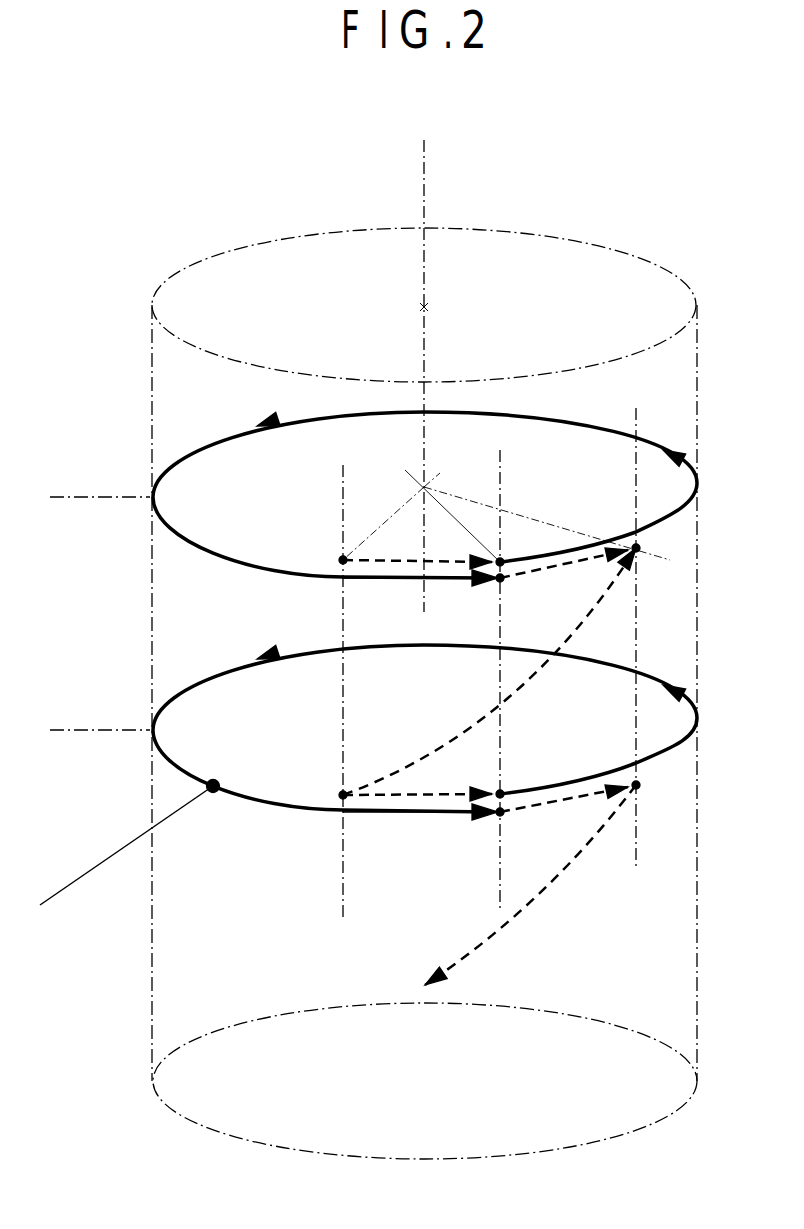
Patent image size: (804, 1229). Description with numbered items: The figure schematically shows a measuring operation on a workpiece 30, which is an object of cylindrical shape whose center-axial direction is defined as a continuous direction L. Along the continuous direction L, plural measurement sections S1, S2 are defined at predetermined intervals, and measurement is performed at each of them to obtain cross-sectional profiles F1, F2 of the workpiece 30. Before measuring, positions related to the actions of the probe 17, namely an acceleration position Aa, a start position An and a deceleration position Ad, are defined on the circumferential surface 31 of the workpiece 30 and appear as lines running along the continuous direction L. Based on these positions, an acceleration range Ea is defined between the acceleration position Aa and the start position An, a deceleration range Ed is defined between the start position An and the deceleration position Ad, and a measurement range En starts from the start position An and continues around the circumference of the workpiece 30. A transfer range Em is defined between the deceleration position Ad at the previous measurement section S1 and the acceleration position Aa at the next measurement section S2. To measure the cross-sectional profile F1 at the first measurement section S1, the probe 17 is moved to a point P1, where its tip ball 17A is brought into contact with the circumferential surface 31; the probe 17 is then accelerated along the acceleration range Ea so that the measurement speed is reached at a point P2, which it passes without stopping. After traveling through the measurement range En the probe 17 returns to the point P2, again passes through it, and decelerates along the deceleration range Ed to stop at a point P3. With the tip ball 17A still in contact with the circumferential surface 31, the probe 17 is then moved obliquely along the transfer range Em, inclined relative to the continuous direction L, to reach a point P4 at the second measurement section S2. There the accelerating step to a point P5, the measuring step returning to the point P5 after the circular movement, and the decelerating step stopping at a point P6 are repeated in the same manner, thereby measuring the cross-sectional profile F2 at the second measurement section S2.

The workpiece 30 is at (620, 251).
The circumferential surface 31 is at (680, 352).
The continuous direction L is at (428, 158).
The probe 17 is at (88, 870).
The tip ball 17A is at (221, 798).
The cross-sectional profile F1 is at (200, 468).
The cross-sectional profile F2 is at (200, 701).
The first measurement section S1 is at (86, 498).
The second measurement section S2 is at (86, 731).
The acceleration position Aa is at (343, 465).
The start position An is at (500, 450).
The deceleration position Ad is at (636, 408).
The measurement range En is at (668, 513).
The acceleration range Ea is at (390, 566).
The deceleration range Ed is at (586, 566).
The transfer range Em is at (583, 620).
The point P1 is at (343, 560).
The point P2 is at (500, 562).
The point P3 is at (637, 550).
The point P4 is at (343, 795).
The point P5 is at (500, 794).
The point P6 is at (638, 786).